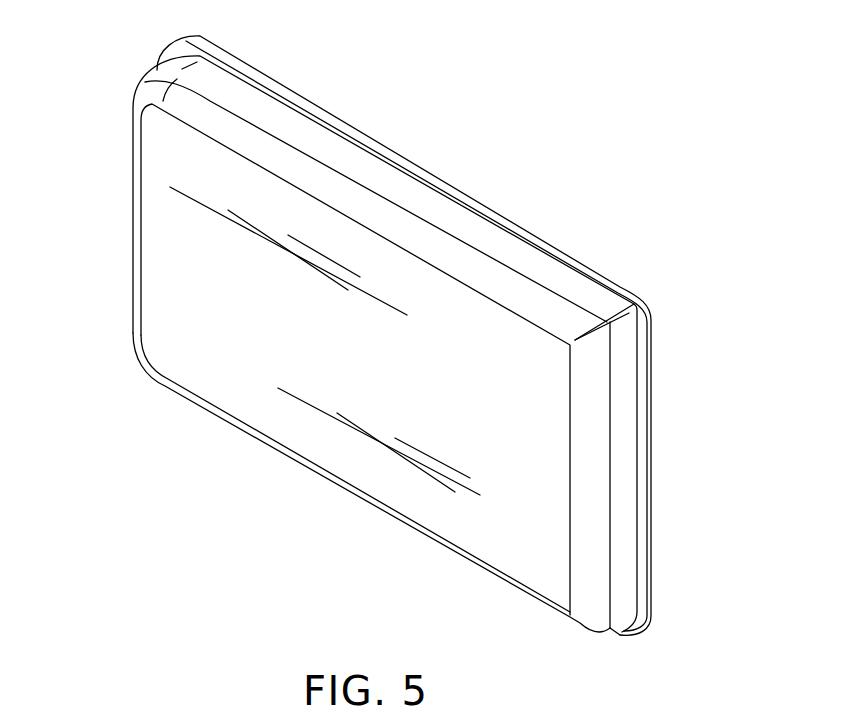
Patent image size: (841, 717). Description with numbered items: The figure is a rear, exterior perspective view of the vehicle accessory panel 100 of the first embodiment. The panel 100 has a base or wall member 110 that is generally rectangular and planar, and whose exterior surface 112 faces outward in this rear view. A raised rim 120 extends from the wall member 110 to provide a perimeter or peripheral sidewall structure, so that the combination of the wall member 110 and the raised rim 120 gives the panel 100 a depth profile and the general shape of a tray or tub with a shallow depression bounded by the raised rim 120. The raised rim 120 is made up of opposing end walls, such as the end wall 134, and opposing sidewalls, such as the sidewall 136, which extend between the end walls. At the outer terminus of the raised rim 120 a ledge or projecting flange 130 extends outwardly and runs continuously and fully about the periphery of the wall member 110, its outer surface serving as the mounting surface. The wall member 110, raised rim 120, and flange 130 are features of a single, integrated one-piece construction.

The panel 100 is at (375, 359).
The wall member 110 is at (238, 343).
The exterior surface 112 is at (305, 432).
The raised rim 120 is at (138, 78).
The flange 130 is at (594, 265).
The end wall 134 is at (406, 226).
The sidewall 136 is at (405, 535).